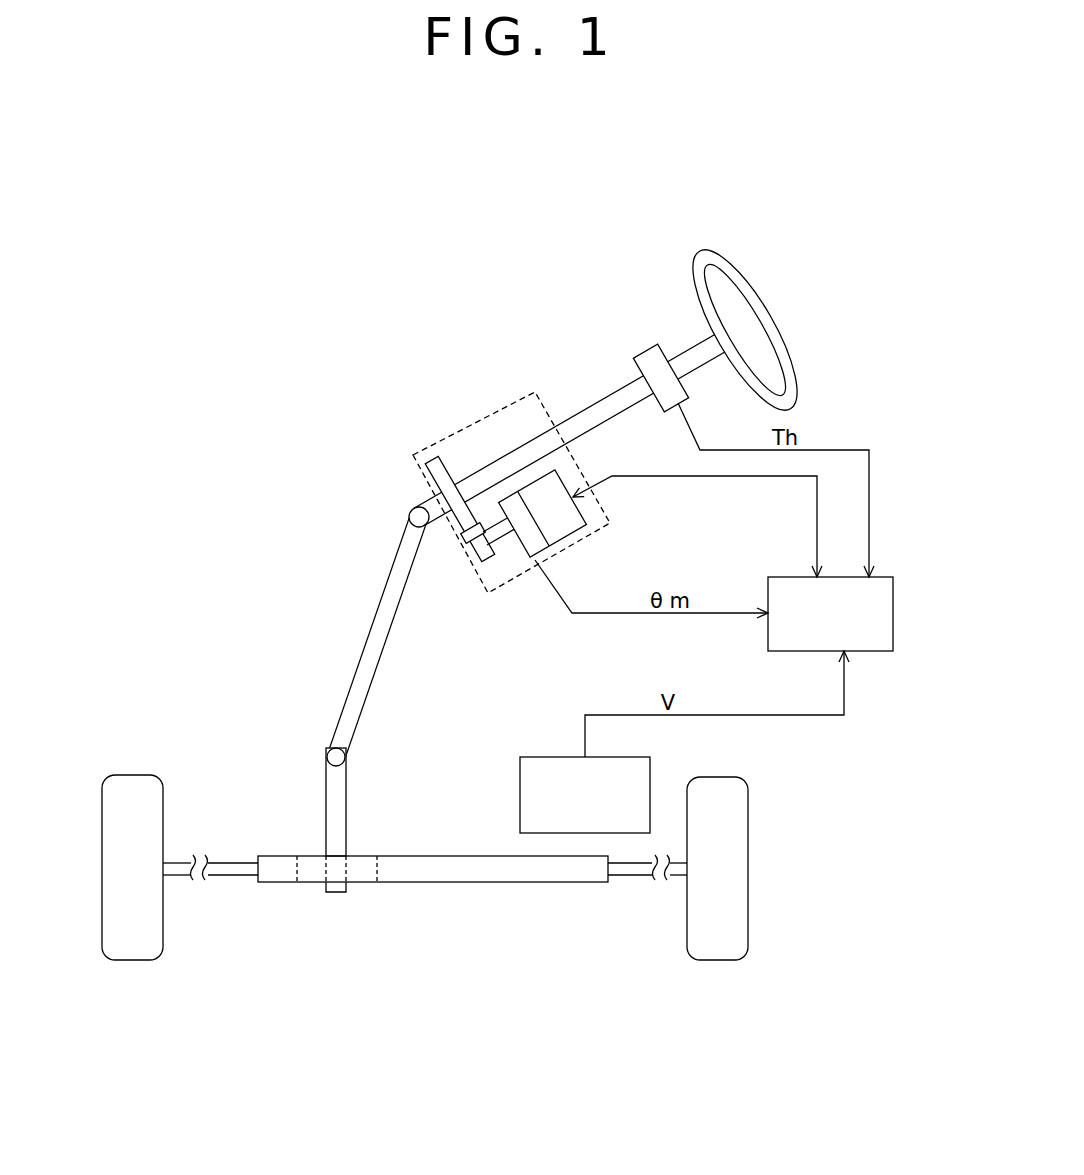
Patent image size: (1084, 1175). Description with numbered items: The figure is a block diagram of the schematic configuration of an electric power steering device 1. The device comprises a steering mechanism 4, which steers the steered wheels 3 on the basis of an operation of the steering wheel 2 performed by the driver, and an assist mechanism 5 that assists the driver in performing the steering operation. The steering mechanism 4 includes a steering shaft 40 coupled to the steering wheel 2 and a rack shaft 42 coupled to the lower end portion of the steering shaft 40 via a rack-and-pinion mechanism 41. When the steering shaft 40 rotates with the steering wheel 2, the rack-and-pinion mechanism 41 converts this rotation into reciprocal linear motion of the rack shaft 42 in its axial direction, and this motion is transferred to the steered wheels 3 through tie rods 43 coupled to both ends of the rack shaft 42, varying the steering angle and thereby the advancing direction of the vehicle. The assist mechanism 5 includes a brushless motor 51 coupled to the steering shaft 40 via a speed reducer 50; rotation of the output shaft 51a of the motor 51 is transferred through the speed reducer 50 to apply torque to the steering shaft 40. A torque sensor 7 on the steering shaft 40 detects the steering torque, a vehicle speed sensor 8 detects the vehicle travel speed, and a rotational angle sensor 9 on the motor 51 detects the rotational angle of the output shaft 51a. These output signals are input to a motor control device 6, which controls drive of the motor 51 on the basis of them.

The electric power steering device 1 is at (336, 391).
The steering wheel 2 is at (778, 330).
The steered wheels 3 is at (135, 775).
The steering mechanism 4 is at (368, 513).
The assist mechanism 5 is at (475, 423).
The motor control device 6 is at (770, 577).
The torque sensor 7 is at (643, 350).
The vehicle speed sensor 8 is at (545, 757).
The rotational angle sensor 9 is at (524, 557).
The steering shaft 40 is at (372, 623).
The rack-and-pinion mechanism 41 is at (378, 856).
The rack shaft 42 is at (452, 856).
The tie rods 43 is at (233, 877).
The speed reducer 50 is at (468, 534).
The motor 51 is at (605, 514).
The output shaft 51a is at (503, 538).